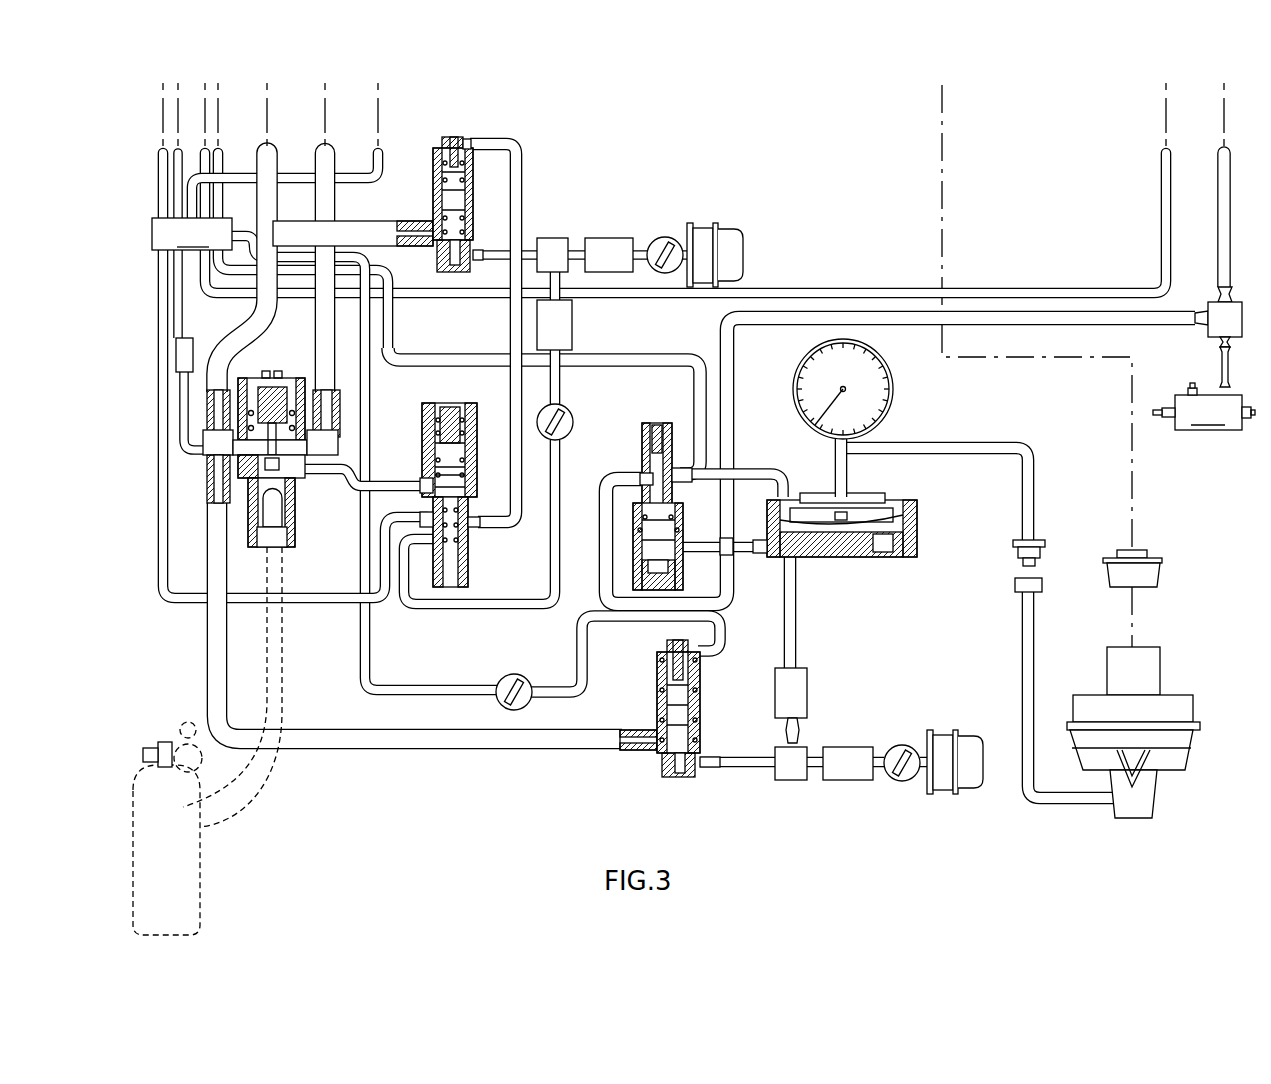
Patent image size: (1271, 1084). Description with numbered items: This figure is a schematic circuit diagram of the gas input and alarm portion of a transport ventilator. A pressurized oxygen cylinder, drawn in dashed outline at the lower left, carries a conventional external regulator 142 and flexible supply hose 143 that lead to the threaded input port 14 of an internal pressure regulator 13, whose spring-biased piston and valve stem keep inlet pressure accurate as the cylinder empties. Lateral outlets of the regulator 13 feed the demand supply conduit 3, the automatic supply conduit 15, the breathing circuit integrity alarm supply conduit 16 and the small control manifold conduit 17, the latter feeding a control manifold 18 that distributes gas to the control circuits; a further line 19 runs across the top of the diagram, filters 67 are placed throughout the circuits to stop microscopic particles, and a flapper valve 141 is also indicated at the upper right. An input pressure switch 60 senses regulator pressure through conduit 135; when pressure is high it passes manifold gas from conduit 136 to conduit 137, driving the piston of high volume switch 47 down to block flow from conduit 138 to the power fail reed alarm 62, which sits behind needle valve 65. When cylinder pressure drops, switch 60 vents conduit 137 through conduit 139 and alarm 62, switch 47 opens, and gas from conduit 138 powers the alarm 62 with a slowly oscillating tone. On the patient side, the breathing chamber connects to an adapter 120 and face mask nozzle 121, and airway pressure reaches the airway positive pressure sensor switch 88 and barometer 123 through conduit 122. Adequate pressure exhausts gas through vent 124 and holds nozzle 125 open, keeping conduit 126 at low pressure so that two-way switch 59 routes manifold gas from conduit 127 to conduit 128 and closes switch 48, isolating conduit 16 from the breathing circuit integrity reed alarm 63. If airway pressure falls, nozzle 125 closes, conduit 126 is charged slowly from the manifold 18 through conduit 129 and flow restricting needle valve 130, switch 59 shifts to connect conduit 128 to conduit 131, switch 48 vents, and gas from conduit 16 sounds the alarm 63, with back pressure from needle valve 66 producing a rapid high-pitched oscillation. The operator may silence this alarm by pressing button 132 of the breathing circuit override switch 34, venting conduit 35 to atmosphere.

The demand supply conduit 3 is at (340, 370).
The internal pressure regulator 13 is at (287, 378).
The input port 14 is at (276, 540).
The automatic supply conduit 15 is at (266, 335).
The breathing circuit integrity alarm supply conduit 16 is at (207, 607).
The control manifold conduit 17 is at (193, 302).
The control manifold 18 is at (192, 234).
The line 19 is at (852, 290).
The breathing circuit override switch 34 is at (1197, 406).
The conduit 35 is at (1220, 368).
The high volume pneumatic on/off switch 47 is at (456, 136).
The high volume pneumatic on/off switch 48 is at (657, 776).
The low volume pneumatic two-way switch 59 is at (643, 440).
The input pressure switch 60 is at (470, 560).
The power fail reed alarm 62 is at (744, 246).
The breathing circuit integrity reed alarm 63 is at (962, 794).
The needle valve 65 is at (666, 237).
The needle valve 66 is at (904, 783).
The filter 67 is at (178, 352).
The airway positive pressure sensor switch 88 is at (882, 558).
The adapter 120 is at (1158, 580).
The face mask nozzle 121 is at (1193, 733).
The conduit 122 is at (1023, 686).
The barometer 123 is at (893, 395).
The vent 124 is at (917, 545).
The nozzle 125 is at (808, 548).
The conduit 126 is at (735, 349).
The conduit 127 is at (660, 358).
The conduit 128 is at (598, 520).
The conduit 129 is at (423, 688).
The flow restricting needle valve 130 is at (516, 675).
The conduit 131 is at (748, 468).
The button 132 is at (1252, 417).
The conduit 135 is at (402, 513).
The conduit 136 is at (160, 516).
The conduit 137 is at (523, 178).
The conduit 138 is at (357, 220).
The conduit 139 is at (430, 610).
The flapper valve 141 is at (1220, 188).
The external regulator 142 is at (175, 742).
The supply hose 143 is at (250, 812).